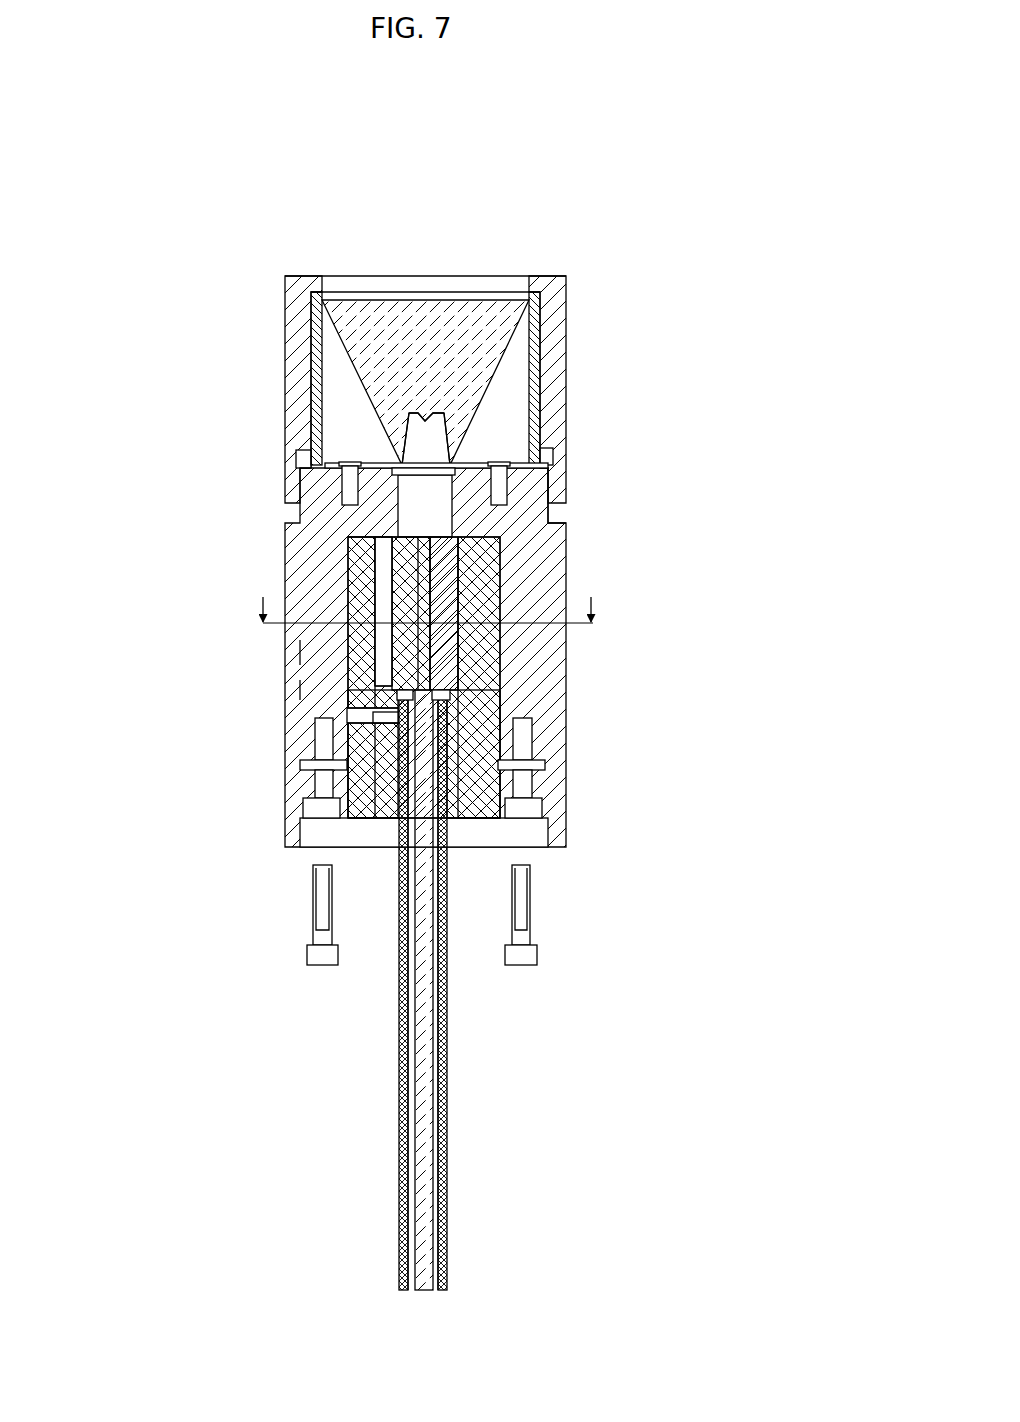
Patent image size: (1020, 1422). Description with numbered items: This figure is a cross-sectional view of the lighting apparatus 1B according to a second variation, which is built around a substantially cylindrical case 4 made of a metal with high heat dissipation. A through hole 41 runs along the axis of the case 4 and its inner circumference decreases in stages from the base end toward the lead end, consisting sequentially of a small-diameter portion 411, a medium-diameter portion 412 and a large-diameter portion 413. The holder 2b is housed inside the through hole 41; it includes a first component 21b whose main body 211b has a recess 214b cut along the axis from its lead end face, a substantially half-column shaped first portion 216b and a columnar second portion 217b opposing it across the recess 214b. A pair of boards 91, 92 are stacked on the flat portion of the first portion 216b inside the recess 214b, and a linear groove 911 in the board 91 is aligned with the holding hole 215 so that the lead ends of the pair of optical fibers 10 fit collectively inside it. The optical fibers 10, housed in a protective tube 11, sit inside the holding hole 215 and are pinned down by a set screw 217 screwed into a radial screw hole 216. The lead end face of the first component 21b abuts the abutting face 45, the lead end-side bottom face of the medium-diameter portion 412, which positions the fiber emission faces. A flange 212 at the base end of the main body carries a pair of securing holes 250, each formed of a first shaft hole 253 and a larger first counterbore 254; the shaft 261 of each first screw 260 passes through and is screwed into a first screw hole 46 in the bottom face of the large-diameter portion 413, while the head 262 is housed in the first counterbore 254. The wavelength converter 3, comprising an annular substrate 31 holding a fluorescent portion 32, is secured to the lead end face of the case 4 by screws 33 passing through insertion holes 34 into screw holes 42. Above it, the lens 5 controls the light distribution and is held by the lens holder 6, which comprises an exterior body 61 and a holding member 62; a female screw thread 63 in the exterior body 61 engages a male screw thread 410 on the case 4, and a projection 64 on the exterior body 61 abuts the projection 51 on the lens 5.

The lighting apparatus 1B is at (236, 196).
The lens 5 is at (395, 298).
The projection 64 is at (318, 284).
The projection 51 is at (322, 295).
The lens holder 6 is at (150, 305).
The holding member 62 is at (311, 322).
The exterior body 61 is at (316, 395).
The wavelength converter 3 is at (222, 393).
The fluorescent portion 32 is at (405, 457).
The substrate 31 is at (397, 466).
The insertion holes 34 is at (325, 464).
The screws 33 is at (392, 470).
The screw holes 42 is at (342, 482).
The recess 214b is at (382, 541).
The abutting face 45 is at (360, 556).
The groove 911 is at (384, 552).
The board 92 is at (415, 600).
The board 91 is at (425, 612).
The second portion 217b is at (316, 651).
The holder 2b is at (338, 686).
The first component 21b is at (352, 700).
The set screw 217 is at (365, 711).
The screw hole 216 is at (382, 718).
The main body 211b is at (350, 725).
The first screw holes 46 is at (322, 735).
The securing holes 250 is at (190, 745).
The first shaft hole 253 is at (318, 766).
The first counterbore 254 is at (320, 790).
The case 4 is at (281, 825).
The first screws 260 is at (188, 877).
The shaft 261 is at (313, 905).
The head 262 is at (312, 958).
The female screw thread 63 is at (565, 492).
The male screw thread 410 is at (562, 505).
The first portion 216b is at (500, 578).
The small-diameter portion 411 is at (450, 516).
The through hole 41 is at (718, 568).
The medium-diameter portion 412 is at (505, 655).
The large-diameter portion 413 is at (545, 690).
The flange 212 is at (522, 790).
The holding hole 215 is at (455, 805).
The optical fibers 10 is at (428, 1105).
The protective tube 11 is at (444, 1200).